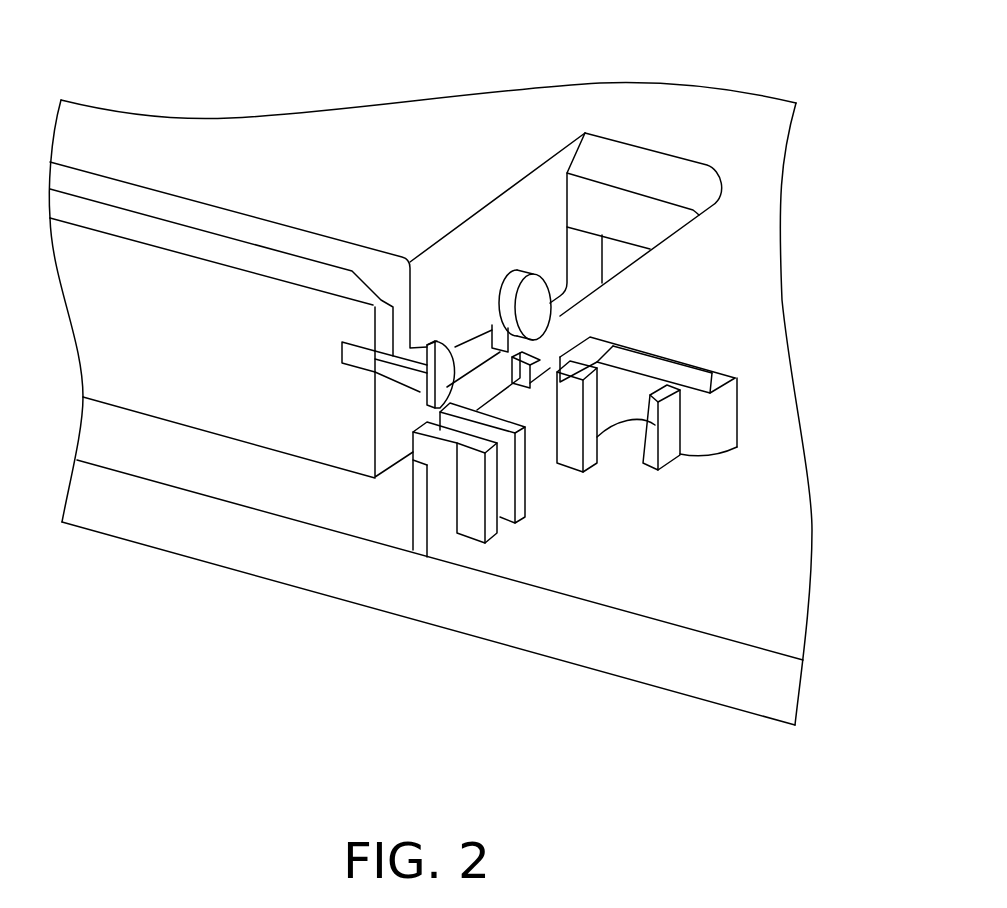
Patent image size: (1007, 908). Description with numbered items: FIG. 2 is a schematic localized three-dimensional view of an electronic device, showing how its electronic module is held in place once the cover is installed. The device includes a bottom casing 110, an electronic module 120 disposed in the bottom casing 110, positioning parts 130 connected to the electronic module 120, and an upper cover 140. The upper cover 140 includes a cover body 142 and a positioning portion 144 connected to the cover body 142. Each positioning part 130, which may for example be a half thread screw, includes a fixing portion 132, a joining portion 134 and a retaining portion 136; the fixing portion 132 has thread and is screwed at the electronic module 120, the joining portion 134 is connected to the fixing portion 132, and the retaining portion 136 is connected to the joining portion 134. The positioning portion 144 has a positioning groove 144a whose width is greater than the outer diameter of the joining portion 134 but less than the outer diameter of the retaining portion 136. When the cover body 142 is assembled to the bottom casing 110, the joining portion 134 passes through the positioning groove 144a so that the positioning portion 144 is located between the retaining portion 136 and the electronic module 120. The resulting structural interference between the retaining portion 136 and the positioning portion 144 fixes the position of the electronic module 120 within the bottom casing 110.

The bottom casing 110 is at (695, 678).
The electronic module 120 is at (157, 383).
The positioning part 130 is at (442, 338).
The fixing portion 132 is at (352, 358).
The joining portion 134 is at (398, 376).
The retaining portion 136 is at (550, 306).
The upper cover 140 is at (272, 108).
The cover body 142 is at (350, 133).
The positioning portion 144 is at (440, 263).
The positioning groove 144a is at (415, 365).